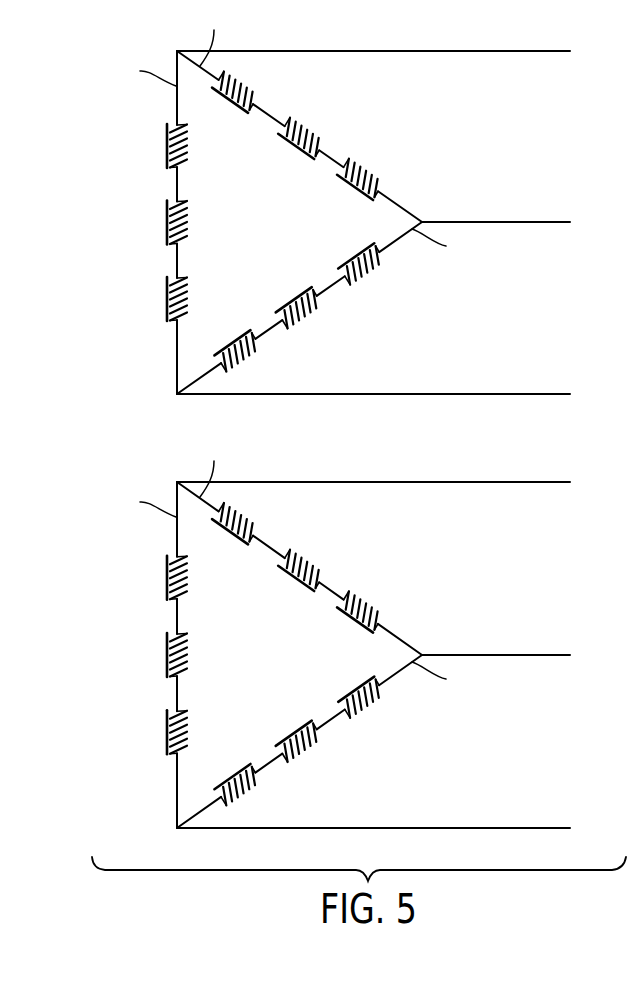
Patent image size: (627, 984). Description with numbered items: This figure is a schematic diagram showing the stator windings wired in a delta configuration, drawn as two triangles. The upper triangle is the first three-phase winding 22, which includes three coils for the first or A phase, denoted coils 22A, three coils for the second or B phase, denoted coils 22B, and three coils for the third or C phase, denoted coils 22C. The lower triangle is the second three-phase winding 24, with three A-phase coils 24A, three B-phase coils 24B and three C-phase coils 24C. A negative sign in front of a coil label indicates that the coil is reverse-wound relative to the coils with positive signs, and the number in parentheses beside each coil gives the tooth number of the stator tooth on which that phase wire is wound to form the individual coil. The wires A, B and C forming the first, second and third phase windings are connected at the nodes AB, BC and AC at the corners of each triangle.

The first three-phase winding 22 is at (84, 166).
The second three-phase winding 24 is at (70, 602).
The A-phase coils of first three-phase winding 22A is at (143, 222).
The B-phase coils of first three-phase winding 22B is at (315, 136).
The C-phase coils of first three-phase winding 22C is at (310, 308).
The A-phase coils of second three-phase winding 24A is at (142, 655).
The B-phase coils of second three-phase winding 24B is at (315, 568).
The C-phase coils of second three-phase winding 24C is at (309, 741).